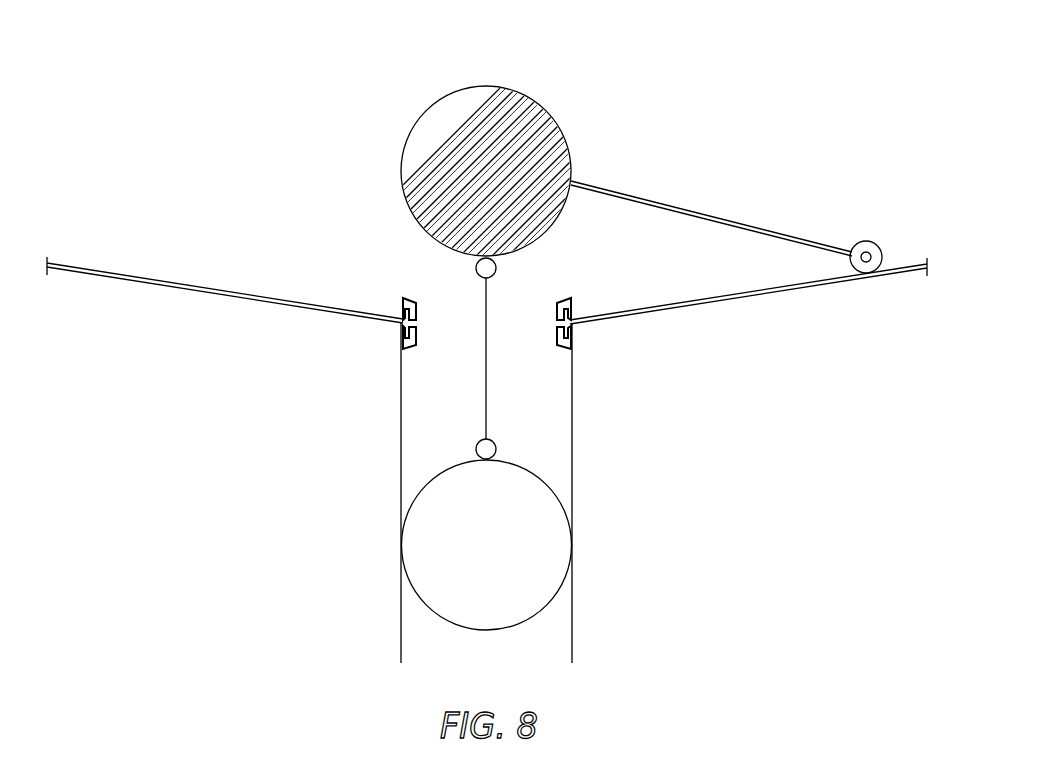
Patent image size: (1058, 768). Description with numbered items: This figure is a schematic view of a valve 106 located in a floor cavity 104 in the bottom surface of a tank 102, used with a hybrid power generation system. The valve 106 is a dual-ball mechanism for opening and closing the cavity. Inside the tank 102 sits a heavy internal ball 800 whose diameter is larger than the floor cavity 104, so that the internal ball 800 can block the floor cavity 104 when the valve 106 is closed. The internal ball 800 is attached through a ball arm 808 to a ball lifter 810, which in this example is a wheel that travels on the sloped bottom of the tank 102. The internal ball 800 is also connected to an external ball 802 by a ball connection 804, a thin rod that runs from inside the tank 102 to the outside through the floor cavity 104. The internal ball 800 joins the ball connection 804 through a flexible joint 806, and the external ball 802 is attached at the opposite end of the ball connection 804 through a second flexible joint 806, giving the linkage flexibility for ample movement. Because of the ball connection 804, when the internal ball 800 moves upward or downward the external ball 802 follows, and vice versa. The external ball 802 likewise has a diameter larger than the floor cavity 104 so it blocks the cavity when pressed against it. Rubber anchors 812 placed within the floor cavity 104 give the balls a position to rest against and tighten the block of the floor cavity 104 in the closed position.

The valve 106 is at (418, 76).
The internal ball 800 is at (548, 114).
The external ball 802 is at (538, 466).
The ball connection 804 is at (481, 357).
The flexible joint 806 is at (497, 266).
The ball arm 808 is at (738, 220).
The ball lifter 810 is at (870, 243).
The rubber anchors 812 is at (403, 307).
The tank 102 is at (160, 277).
The floor cavity 104 is at (447, 322).